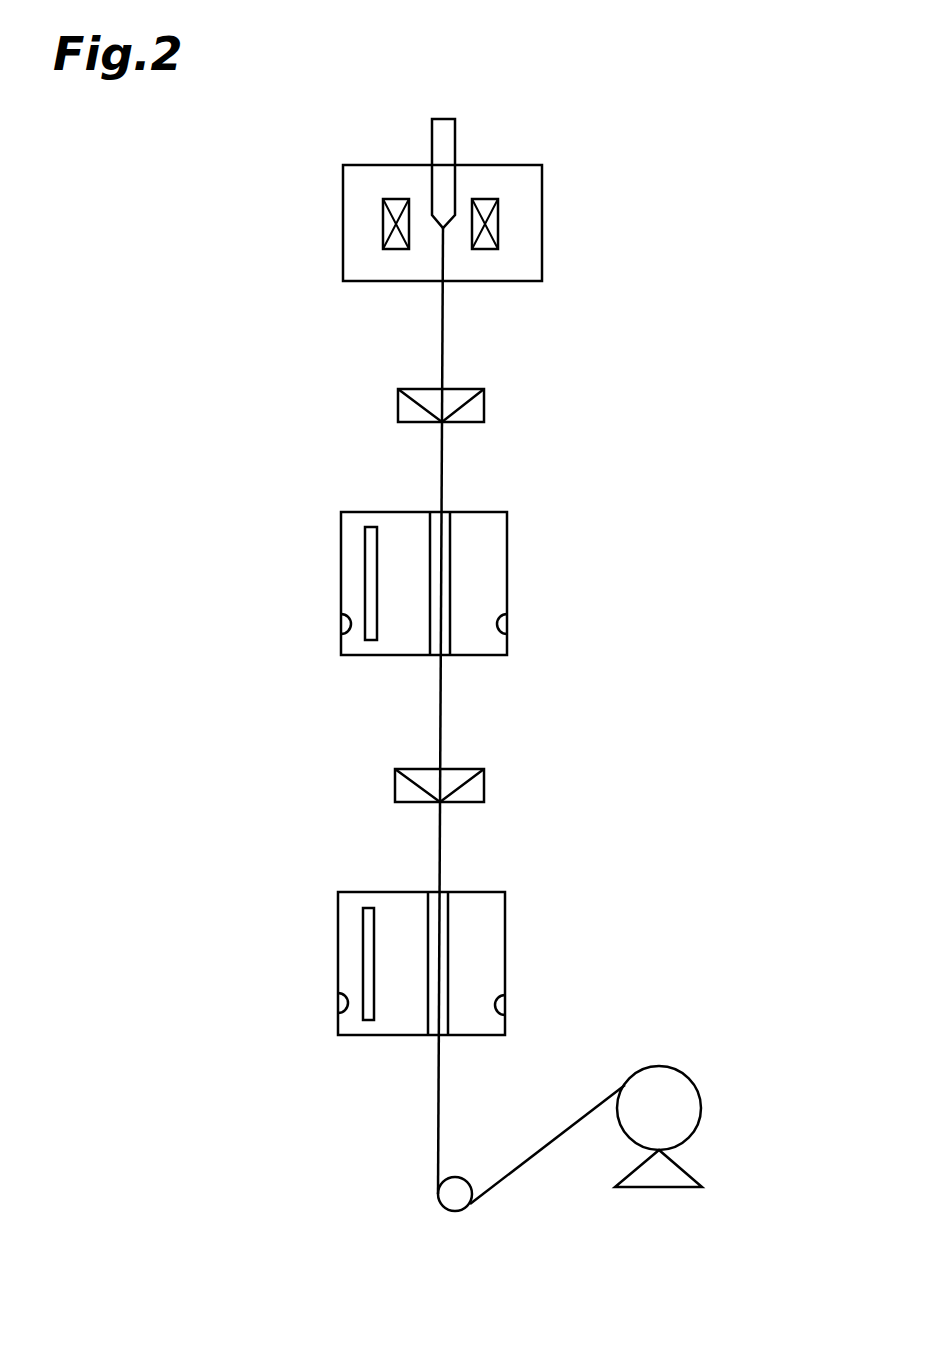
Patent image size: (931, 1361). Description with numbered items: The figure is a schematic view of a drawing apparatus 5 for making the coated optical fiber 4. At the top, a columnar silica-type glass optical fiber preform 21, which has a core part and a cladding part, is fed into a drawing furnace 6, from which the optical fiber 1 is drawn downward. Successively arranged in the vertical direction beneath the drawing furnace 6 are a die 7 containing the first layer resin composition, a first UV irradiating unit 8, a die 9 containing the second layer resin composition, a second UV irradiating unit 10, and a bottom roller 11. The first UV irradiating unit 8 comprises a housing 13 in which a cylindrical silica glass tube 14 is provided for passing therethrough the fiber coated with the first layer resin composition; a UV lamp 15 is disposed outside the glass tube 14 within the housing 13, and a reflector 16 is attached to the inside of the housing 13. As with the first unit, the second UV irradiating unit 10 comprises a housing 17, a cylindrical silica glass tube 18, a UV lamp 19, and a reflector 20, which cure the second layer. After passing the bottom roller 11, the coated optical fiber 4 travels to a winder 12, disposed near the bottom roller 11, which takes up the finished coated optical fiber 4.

The drawing apparatus 5 is at (573, 100).
The optical fiber preform 21 is at (455, 143).
The drawing furnace 6 is at (542, 210).
The optical fiber 1 is at (442, 322).
The die 7 is at (484, 405).
The first UV irradiating unit 8 is at (597, 565).
The housing 13 is at (367, 512).
The cylindrical silica glass tube 14 is at (452, 537).
The UV lamp 15 is at (365, 550).
The reflector 16 is at (341, 637).
The die 9 is at (484, 785).
The second UV irradiating unit 10 is at (595, 945).
The housing 17 is at (365, 892).
The cylindrical silica glass tube 18 is at (450, 917).
The UV lamp 19 is at (363, 930).
The reflector 20 is at (338, 1017).
The bottom roller 11 is at (448, 1200).
The coated optical fiber 4 is at (533, 1153).
The winder 12 is at (702, 1100).